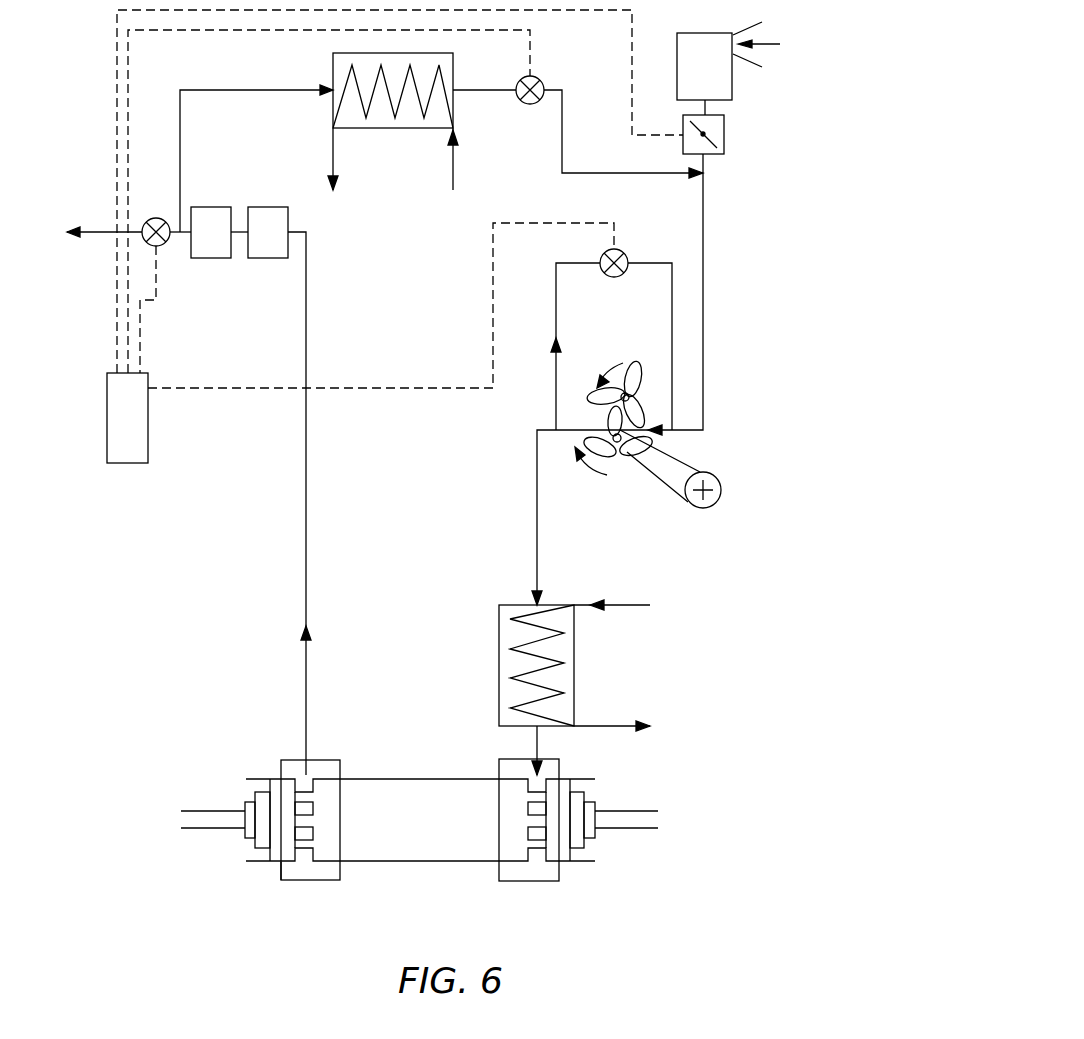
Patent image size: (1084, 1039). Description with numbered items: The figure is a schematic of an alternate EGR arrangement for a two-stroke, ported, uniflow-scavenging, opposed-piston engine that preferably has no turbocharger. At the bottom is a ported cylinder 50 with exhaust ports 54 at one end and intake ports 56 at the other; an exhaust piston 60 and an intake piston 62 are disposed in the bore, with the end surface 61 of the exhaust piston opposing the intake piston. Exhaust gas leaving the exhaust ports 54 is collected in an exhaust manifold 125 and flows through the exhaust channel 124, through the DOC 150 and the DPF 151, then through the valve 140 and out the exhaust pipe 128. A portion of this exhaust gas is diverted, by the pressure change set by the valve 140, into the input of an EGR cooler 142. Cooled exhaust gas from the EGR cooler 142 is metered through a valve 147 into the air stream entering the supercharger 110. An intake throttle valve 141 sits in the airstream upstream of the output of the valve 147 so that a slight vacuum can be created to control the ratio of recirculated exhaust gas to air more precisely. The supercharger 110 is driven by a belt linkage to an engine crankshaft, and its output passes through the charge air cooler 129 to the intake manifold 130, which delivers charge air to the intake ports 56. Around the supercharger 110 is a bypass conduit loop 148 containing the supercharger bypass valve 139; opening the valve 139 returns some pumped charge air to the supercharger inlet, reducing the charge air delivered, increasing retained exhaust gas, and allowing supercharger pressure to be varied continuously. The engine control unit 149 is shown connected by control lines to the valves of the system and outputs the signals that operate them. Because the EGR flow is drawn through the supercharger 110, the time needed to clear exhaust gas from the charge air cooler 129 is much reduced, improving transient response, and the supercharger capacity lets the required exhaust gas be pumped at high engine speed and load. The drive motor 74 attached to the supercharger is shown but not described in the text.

The ported cylinder 50 is at (484, 779).
The exhaust ports 54 is at (322, 829).
The intake ports 56 is at (514, 823).
The exhaust piston 60 is at (262, 792).
The end surface of exhaust piston 61 is at (290, 792).
The intake piston 62 is at (577, 780).
The fan motor 74 is at (703, 508).
The supercharger 110 is at (648, 390).
The exhaust channel 124 is at (305, 583).
The exhaust manifold 125 is at (280, 865).
The exhaust pipe 128 is at (107, 236).
The charge air cooler 129 is at (574, 645).
The intake manifold 130 is at (559, 866).
The supercharger bypass valve 139 is at (603, 253).
The valve 140 is at (156, 218).
The intake throttle valve 141 is at (724, 136).
The EGR cooler 142 is at (392, 128).
The valve 147 is at (530, 104).
The bypass conduit loop 148 is at (672, 307).
The engine control unit 149 is at (123, 463).
The DOC 150 is at (270, 207).
The DPF 151 is at (211, 207).